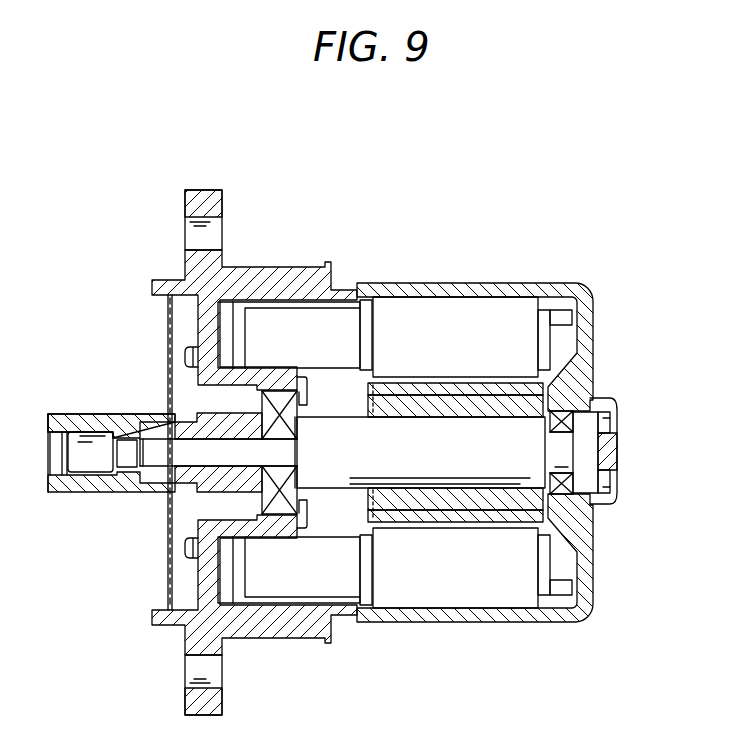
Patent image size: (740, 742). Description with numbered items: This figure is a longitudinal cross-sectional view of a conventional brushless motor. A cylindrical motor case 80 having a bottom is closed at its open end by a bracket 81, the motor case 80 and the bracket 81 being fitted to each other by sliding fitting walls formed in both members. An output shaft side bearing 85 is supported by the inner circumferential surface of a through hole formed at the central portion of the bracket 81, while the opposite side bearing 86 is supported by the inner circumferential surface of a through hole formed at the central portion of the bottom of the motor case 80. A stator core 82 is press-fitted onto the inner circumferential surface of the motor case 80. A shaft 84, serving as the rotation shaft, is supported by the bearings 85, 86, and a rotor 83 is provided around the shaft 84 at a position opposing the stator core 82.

The motor case 80 is at (498, 284).
The bracket 81 is at (296, 181).
The stator core 82 is at (437, 320).
The rotor 83 is at (476, 502).
The shaft 84 is at (157, 457).
The output shaft side bearing 85 is at (262, 405).
The opposite side bearing 86 is at (560, 410).